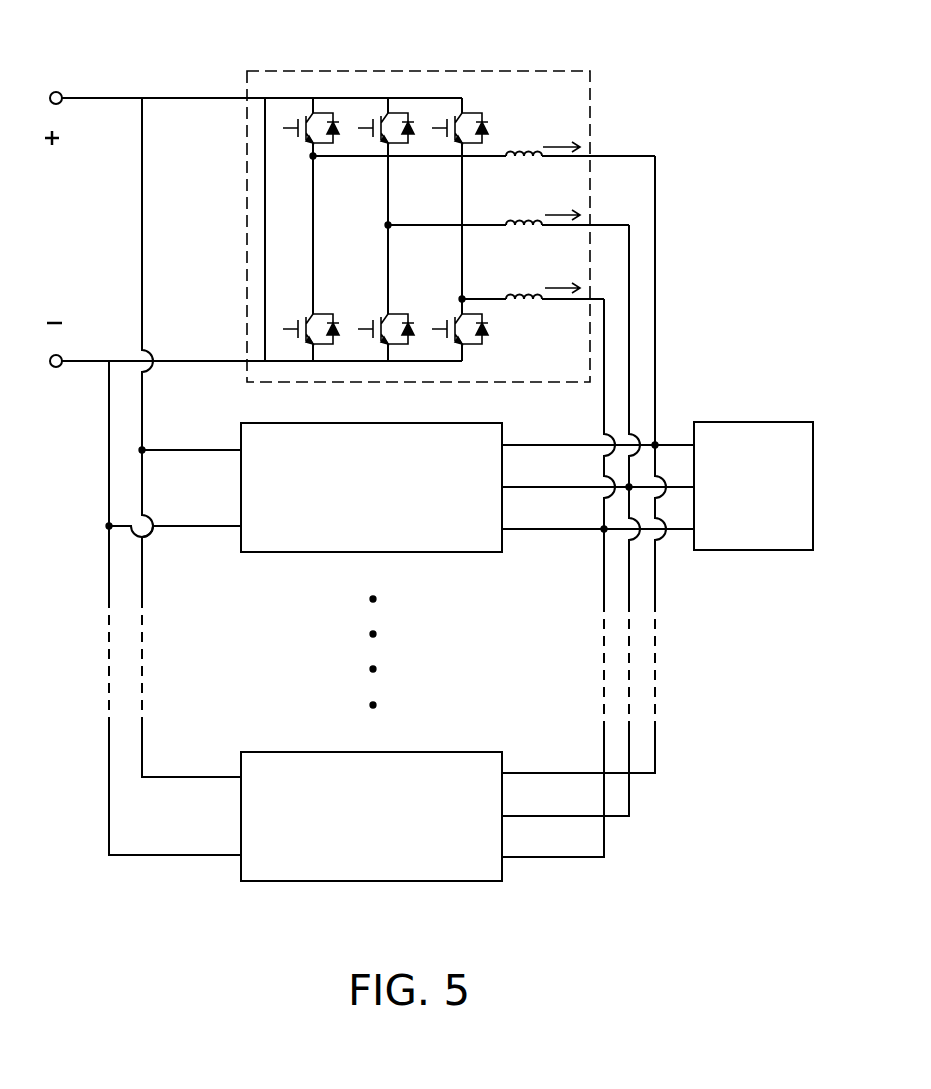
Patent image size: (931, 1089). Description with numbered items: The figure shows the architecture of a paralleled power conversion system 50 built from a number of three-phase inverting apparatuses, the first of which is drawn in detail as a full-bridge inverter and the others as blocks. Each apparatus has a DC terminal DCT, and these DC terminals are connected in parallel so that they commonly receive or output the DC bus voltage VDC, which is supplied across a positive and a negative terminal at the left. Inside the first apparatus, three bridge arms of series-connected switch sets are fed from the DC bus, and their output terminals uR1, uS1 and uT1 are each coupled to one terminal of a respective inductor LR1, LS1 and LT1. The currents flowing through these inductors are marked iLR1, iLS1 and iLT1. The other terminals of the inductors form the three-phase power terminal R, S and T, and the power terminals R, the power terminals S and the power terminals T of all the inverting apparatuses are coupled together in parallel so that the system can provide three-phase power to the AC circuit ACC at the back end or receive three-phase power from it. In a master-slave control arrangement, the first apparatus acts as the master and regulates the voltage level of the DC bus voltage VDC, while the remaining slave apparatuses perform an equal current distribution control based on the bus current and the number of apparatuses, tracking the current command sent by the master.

The paralleled power conversion system 50 is at (732, 906).
The AC circuit ACC is at (750, 421).
The DC terminal DCT is at (109, 128).
The DC bus voltage VDC is at (64, 244).
The bridge arm output terminal uR1 is at (392, 167).
The bridge arm output terminal uS1 is at (430, 227).
The bridge arm output terminal uT1 is at (466, 300).
The inductor LR1 is at (580, 170).
The inductor LS1 is at (567, 238).
The inductor LT1 is at (555, 312).
The inductor current iLR1 is at (557, 132).
The inductor current iLS1 is at (556, 203).
The inductor current iLT1 is at (556, 280).
The power terminal R is at (598, 433).
The power terminal S is at (598, 475).
The power terminal T is at (598, 517).